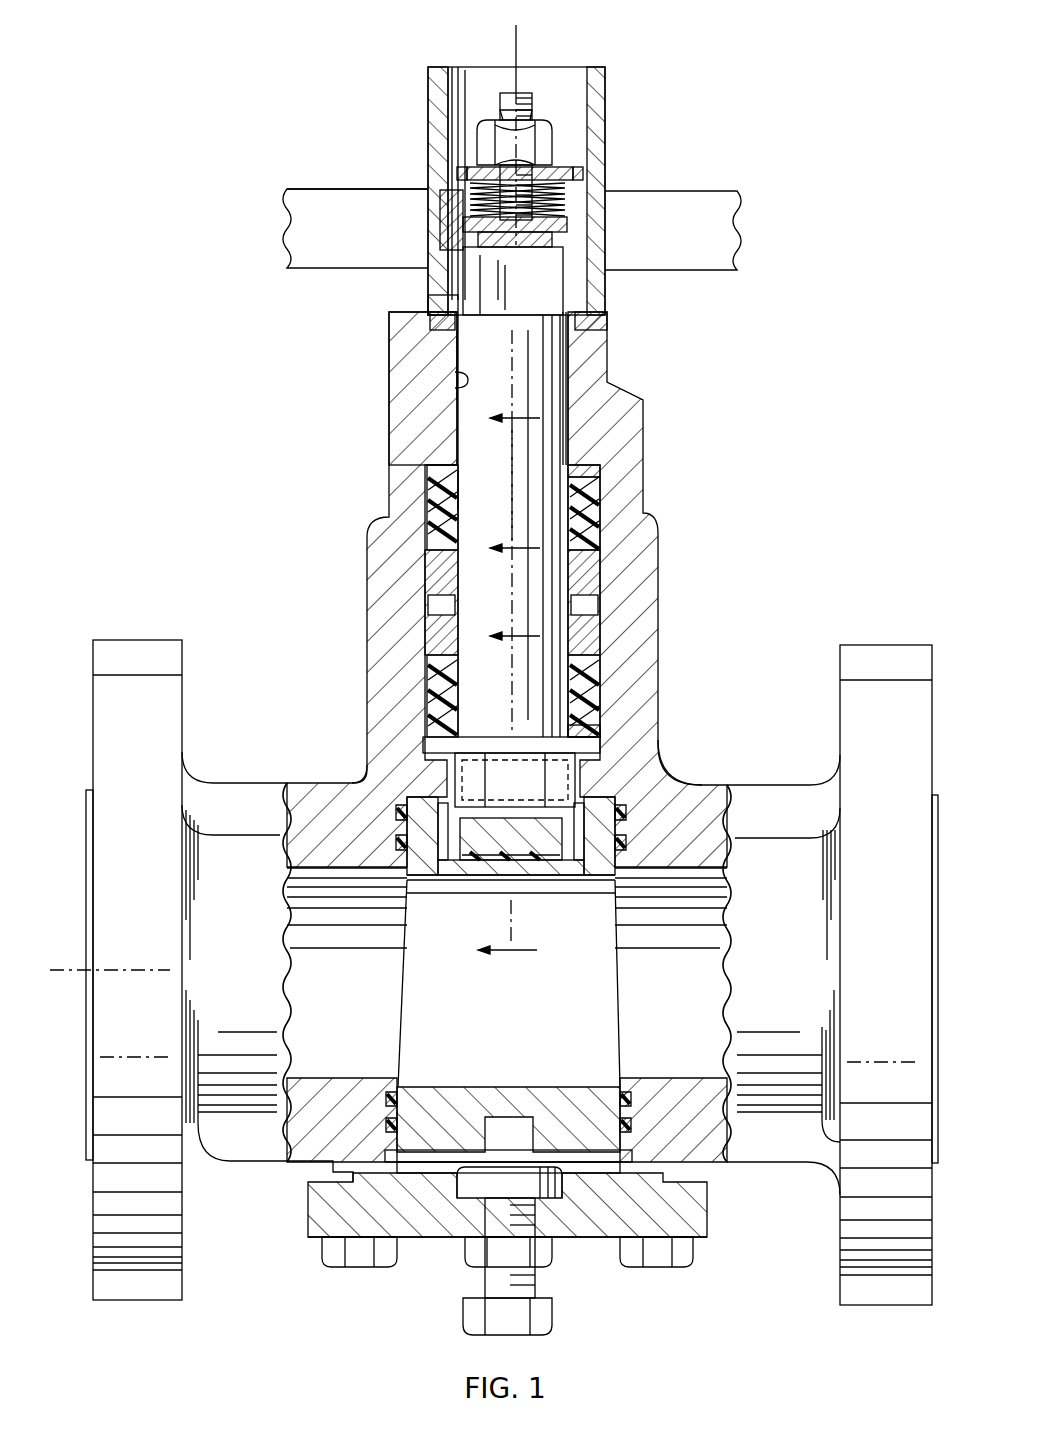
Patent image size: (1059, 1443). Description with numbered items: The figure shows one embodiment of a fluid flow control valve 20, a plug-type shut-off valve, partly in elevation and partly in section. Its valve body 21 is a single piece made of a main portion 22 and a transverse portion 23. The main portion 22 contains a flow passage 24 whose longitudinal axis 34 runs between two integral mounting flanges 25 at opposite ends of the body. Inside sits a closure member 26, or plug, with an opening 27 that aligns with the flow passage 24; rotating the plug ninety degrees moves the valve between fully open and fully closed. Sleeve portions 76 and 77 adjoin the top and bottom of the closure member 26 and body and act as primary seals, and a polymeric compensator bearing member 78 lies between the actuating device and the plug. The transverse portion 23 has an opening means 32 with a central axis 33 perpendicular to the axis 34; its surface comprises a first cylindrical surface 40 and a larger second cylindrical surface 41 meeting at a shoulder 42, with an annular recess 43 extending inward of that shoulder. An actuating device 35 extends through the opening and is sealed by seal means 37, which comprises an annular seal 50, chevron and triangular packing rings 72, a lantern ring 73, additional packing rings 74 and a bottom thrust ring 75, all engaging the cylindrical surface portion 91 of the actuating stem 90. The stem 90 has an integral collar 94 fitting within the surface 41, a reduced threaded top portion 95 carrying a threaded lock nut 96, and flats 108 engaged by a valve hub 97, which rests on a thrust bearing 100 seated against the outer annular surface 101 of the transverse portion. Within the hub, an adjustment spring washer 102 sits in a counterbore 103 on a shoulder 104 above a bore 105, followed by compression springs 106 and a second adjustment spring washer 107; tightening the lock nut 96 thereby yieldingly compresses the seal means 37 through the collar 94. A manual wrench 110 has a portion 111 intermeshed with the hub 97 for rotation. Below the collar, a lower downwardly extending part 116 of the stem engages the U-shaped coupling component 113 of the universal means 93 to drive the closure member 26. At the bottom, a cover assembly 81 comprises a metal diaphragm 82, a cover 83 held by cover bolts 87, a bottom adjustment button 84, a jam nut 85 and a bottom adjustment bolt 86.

The fluid flow control valve 20 is at (768, 178).
The valve body 21 is at (662, 588).
The main portion 22 is at (665, 768).
The transverse portion 23 is at (645, 408).
The flow passage 24 is at (710, 890).
The mounting flanges 25 is at (130, 1260).
The closure member 26 is at (440, 808).
The opening 27 is at (455, 1090).
The opening means 32 is at (450, 416).
The central axis 33 is at (520, 48).
The longitudinal axis 34 is at (72, 968).
The actuating device 35 is at (605, 75).
The seal means 37 is at (592, 468).
The first cylindrical surface 40 is at (452, 378).
The second cylindrical surface 41 is at (440, 582).
The shoulder 42 is at (456, 483).
The annular recess 43 is at (450, 472).
The annular seal 50 is at (602, 490).
The packing rings 72 is at (600, 535).
The lantern ring 73 is at (588, 570).
The additional polymeric packing rings 74 is at (600, 688).
The bottom thrust ring 75 is at (590, 730).
The top sleeve portion 76 is at (630, 808).
The bottom sleeve portion 77 is at (632, 1095).
The compensator bearing member 78 is at (495, 870).
The cover assembly 81 is at (592, 1250).
The metal diaphragm 82 is at (400, 1168).
The cover 83 is at (700, 1220).
The bottom adjustment button 84 is at (510, 1185).
The jam nut 85 is at (470, 1255).
The bottom adjustment bolt 86 is at (470, 1318).
The cover bolts 87 is at (340, 1262).
The actuating stem 90 is at (482, 520).
The cylindrical outside surface portion 91 is at (570, 390).
The universal means 93 is at (652, 770).
The collar 94 is at (435, 745).
The top threaded portion 95 is at (532, 108).
The threaded lock nut 96 is at (552, 143).
The valve hub 97 is at (440, 82).
The thrust bearing 100 is at (580, 335).
The outer annular surface 101 is at (428, 298).
The adjustment spring washer 102 is at (460, 215).
The counterbore 103 is at (462, 90).
The shoulder 104 is at (470, 172).
The bore 105 is at (567, 245).
The compression springs 106 is at (567, 195).
The adjustment spring washer 107 is at (583, 172).
The flats 108 is at (545, 287).
The manual wrench 110 is at (287, 220).
The wrench portion 111 is at (310, 195).
The U-shaped coupling component 113 is at (540, 860).
The lower downwardly extending part 116 is at (465, 762).